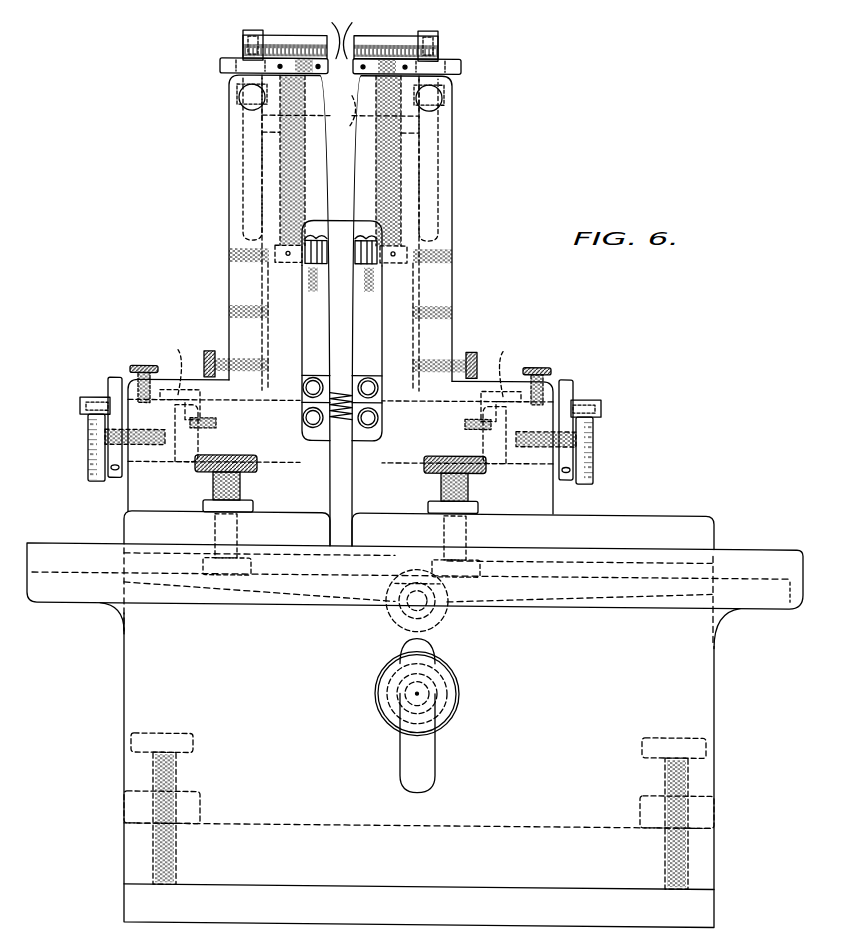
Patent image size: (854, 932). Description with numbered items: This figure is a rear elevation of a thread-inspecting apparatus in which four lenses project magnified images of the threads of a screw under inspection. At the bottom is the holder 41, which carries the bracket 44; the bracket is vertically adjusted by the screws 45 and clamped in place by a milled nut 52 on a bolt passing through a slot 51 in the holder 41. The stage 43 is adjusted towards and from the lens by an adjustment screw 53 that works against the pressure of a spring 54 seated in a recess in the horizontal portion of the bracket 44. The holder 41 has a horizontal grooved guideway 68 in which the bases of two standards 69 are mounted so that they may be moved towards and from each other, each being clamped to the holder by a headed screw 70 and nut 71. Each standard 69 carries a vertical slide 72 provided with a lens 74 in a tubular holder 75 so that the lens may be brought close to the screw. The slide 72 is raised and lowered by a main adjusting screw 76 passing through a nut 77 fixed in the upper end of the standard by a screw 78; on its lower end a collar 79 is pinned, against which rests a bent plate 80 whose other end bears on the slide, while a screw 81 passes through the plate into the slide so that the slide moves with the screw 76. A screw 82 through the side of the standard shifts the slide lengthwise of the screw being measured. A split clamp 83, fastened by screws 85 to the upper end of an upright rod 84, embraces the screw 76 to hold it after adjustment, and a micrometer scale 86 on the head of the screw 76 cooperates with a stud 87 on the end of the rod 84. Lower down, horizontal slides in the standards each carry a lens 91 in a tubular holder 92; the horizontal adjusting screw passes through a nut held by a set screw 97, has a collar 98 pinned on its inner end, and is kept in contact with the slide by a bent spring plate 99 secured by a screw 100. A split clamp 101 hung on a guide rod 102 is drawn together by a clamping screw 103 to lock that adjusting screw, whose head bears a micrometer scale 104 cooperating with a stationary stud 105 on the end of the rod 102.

The holder 41 is at (712, 859).
The stage 43 is at (708, 511).
The bracket 44 is at (590, 608).
The screws 45 is at (135, 733).
The slot 51 is at (428, 741).
The milled nut 52 is at (460, 690).
The adjustment screw 53 is at (440, 615).
The spring 54 is at (388, 614).
The horizontal grooved guideway 68 is at (790, 605).
The standards 69 is at (229, 228).
The headed screw 70 is at (237, 529).
The nut 71 is at (240, 485).
The vertical slide 72 is at (300, 324).
The lens 74 is at (316, 377).
The tubular holder 75 is at (302, 388).
The screw 76 is at (280, 135).
The nut 77 is at (326, 104).
The screw 78 is at (239, 88).
The collar 79 is at (275, 251).
The bent plate 80 is at (352, 240).
The screw 81 is at (313, 290).
The screw 82 is at (208, 351).
The split clamp 83 is at (220, 66).
The upright rod 84 is at (243, 176).
The screws 85 is at (344, 36).
The micrometer scale 86 is at (305, 35).
The stud 87 is at (248, 30).
The lens 91 is at (308, 414).
The tubular holder 92 is at (310, 428).
The set screw 97 is at (142, 366).
The collar 98 is at (178, 462).
The bent spring plate 99 is at (178, 360).
The screw 100 is at (198, 430).
The split clamp 101 is at (110, 378).
The guide rod 102 is at (185, 392).
The clamping screw 103 is at (96, 440).
The micrometer scale 104 is at (88, 466).
The stationary stud 105 is at (88, 398).